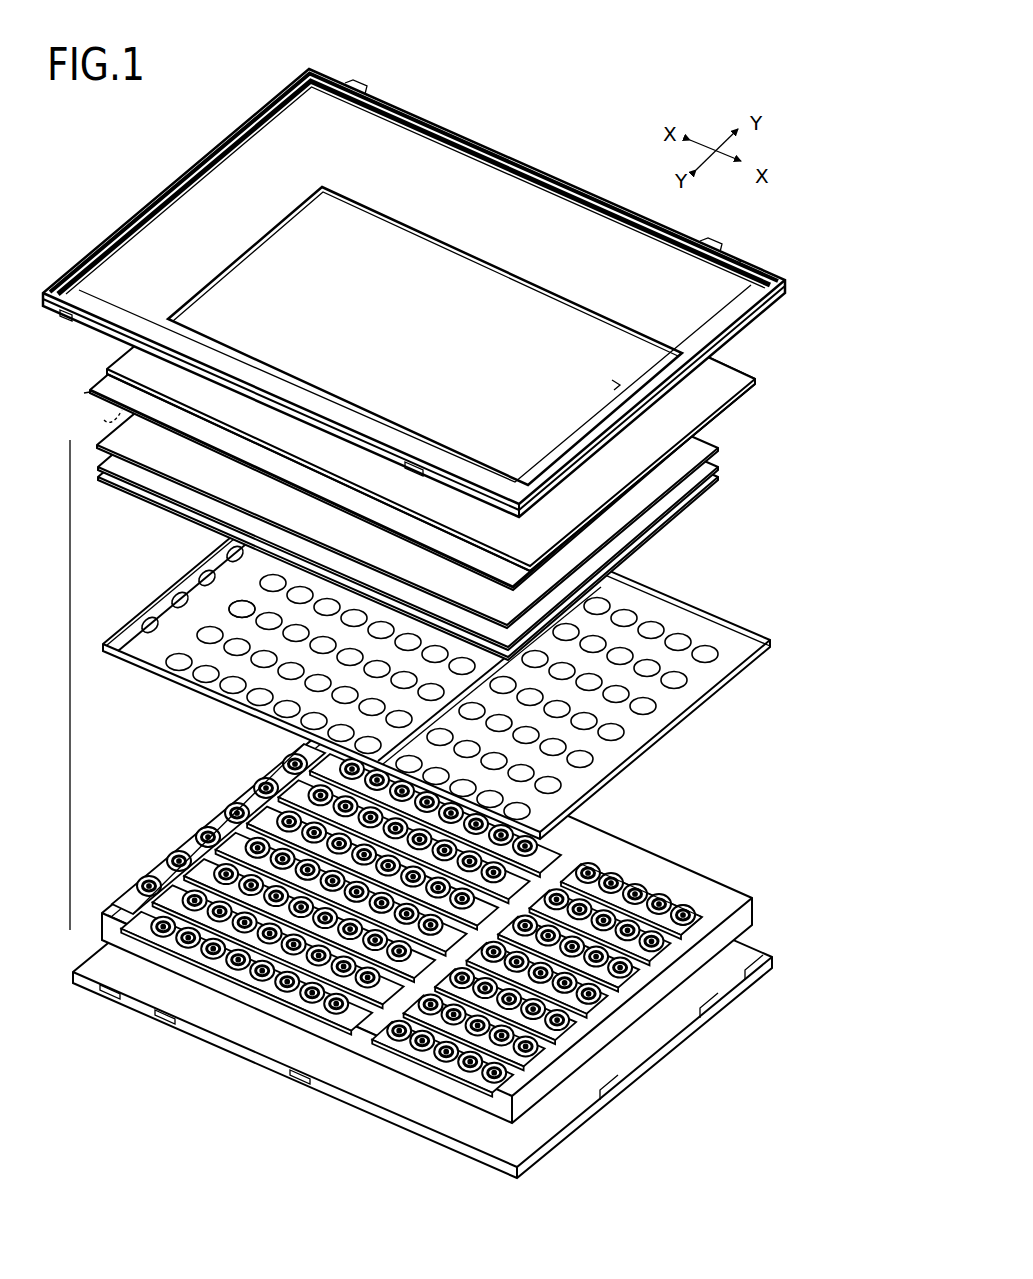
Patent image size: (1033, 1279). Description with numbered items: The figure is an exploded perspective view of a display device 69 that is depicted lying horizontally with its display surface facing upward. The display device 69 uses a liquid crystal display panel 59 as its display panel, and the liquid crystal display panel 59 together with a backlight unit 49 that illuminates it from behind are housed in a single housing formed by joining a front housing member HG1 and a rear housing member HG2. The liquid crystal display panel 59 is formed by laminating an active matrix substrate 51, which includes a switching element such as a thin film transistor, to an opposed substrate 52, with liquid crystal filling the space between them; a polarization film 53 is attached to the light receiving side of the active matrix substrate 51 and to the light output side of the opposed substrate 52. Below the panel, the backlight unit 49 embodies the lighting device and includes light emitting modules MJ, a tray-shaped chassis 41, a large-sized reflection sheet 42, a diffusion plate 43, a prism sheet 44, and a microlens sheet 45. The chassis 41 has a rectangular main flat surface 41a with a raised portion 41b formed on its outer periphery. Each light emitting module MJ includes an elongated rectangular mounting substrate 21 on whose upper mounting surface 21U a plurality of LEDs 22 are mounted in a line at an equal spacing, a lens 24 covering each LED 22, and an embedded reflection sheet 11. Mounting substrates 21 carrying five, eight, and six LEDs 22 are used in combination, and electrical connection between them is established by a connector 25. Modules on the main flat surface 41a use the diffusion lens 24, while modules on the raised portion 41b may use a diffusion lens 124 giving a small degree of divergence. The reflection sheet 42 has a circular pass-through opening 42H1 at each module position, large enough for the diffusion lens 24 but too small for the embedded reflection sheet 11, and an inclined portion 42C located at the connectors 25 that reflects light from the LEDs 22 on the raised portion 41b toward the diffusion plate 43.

The display device 69 is at (173, 170).
The front housing member HG1 is at (70, 280).
The rear housing member HG2 is at (73, 988).
The liquid crystal display panel 59 is at (75, 338).
The opposed substrate 52 is at (112, 367).
The active matrix substrate 51 is at (100, 376).
The polarization film 53 is at (104, 415).
The microlens sheet 45 is at (110, 452).
The prism sheet 44 is at (108, 469).
The diffusion plate 43 is at (112, 479).
The reflection sheet 42 is at (112, 636).
The pass-through opening 42H1 is at (238, 602).
The inclined portion 42C is at (300, 741).
The backlight unit 49 is at (78, 428).
The chassis 41 is at (100, 917).
The main flat surface 41a is at (123, 926).
The raised portion 41b is at (220, 981).
The connector 25 is at (360, 1034).
The mounting substrate 21 is at (187, 847).
The mounting surface 21U is at (163, 873).
The LED 22 is at (205, 832).
The embedded reflection sheet 11 is at (217, 835).
The diffusion lens 124 is at (222, 830).
The lens 24 is at (683, 906).
The light emitting module MJ is at (783, 871).